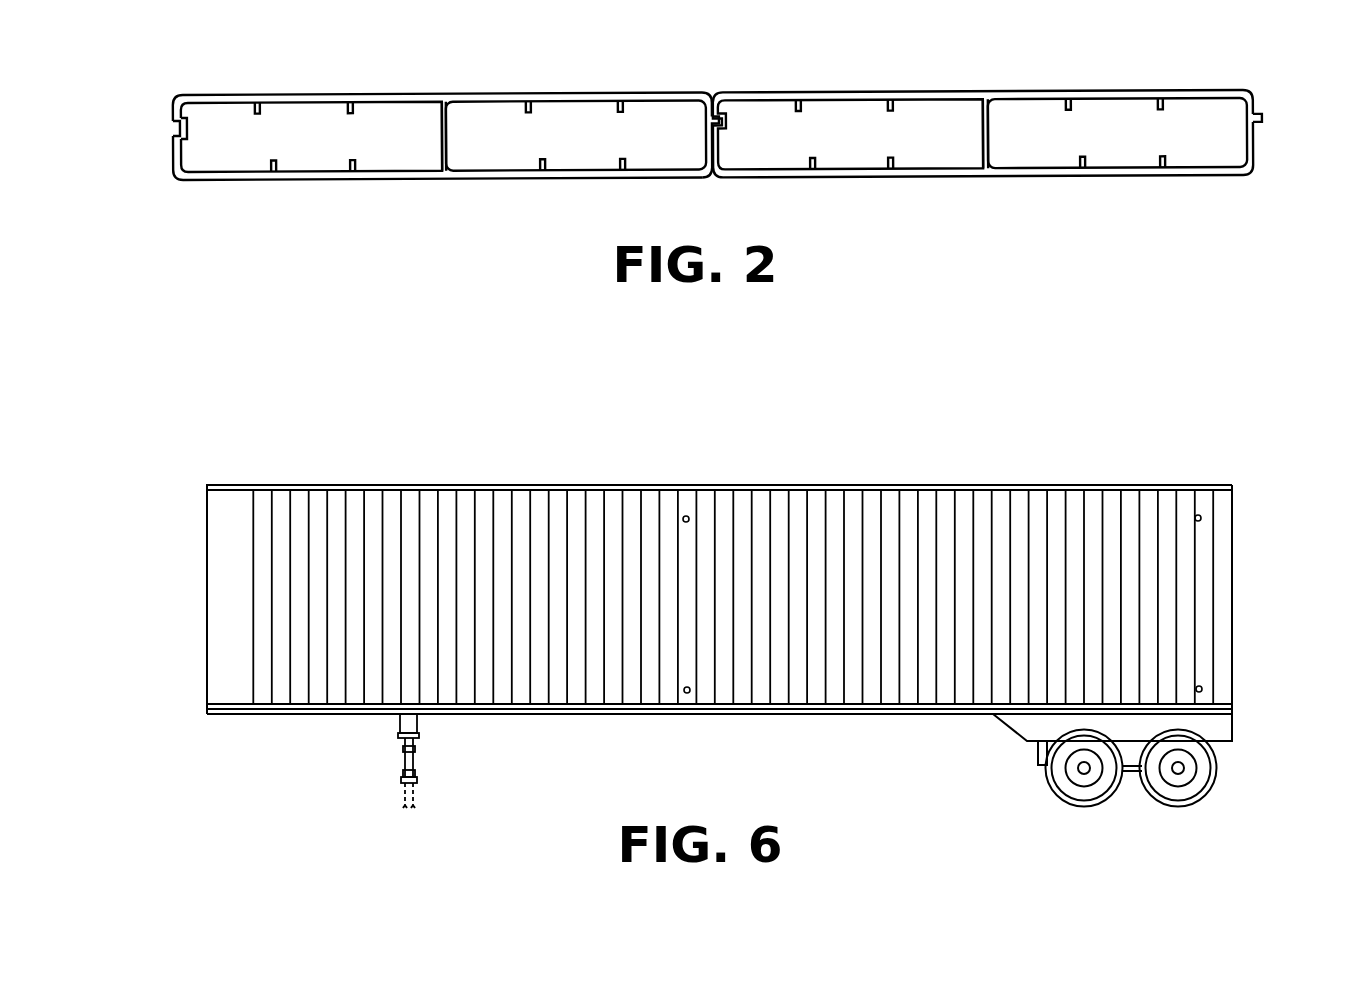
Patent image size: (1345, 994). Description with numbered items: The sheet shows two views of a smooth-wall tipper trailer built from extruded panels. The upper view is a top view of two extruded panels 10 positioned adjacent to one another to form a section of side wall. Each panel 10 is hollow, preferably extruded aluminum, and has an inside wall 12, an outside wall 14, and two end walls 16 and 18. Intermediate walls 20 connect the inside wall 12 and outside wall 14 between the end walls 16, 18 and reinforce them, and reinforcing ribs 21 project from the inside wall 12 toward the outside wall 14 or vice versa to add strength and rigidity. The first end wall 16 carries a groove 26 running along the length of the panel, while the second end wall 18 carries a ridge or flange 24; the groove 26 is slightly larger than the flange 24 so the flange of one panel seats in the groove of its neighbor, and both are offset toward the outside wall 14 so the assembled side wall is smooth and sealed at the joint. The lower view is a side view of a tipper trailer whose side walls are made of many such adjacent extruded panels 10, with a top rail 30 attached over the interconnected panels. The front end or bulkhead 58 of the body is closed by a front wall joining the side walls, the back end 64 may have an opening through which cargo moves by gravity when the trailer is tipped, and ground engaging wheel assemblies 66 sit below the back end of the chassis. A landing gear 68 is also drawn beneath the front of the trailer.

In FIG. 2, the extruded panel 10 is at (181, 76).
In FIG. 6, the extruded panel 10 is at (522, 492).
In FIG. 2, the inside wall 12 is at (228, 180).
In FIG. 2, the outside wall 14 is at (300, 95).
In FIG. 2, the first end wall 16 is at (172, 160).
In FIG. 2, the second end wall 18 is at (708, 95).
In FIG. 2, the intermediate wall 20 is at (444, 180).
In FIG. 2, the reinforcing rib 21 is at (525, 103).
In FIG. 2, the flange 24 is at (1263, 123).
In FIG. 2, the groove 26 is at (175, 128).
In FIG. 6, the top rail 30 is at (688, 492).
In FIG. 6, the front end or bulkhead of the trailer body 58 is at (217, 560).
In FIG. 6, the back end of the tipper trailer 64 is at (1237, 605).
In FIG. 6, the ground engaging wheel assembly 66 is at (1120, 792).
In FIG. 6, the landing gear 68 is at (402, 762).